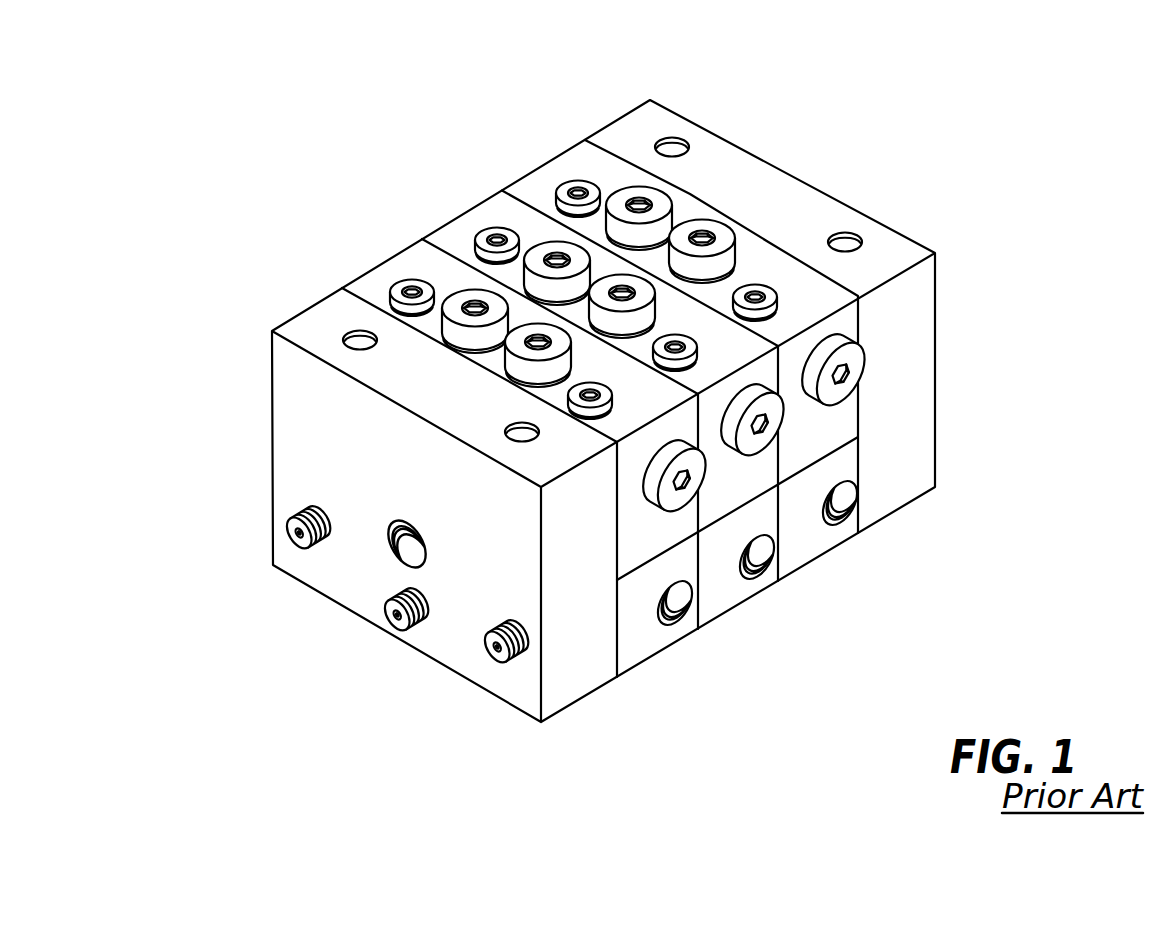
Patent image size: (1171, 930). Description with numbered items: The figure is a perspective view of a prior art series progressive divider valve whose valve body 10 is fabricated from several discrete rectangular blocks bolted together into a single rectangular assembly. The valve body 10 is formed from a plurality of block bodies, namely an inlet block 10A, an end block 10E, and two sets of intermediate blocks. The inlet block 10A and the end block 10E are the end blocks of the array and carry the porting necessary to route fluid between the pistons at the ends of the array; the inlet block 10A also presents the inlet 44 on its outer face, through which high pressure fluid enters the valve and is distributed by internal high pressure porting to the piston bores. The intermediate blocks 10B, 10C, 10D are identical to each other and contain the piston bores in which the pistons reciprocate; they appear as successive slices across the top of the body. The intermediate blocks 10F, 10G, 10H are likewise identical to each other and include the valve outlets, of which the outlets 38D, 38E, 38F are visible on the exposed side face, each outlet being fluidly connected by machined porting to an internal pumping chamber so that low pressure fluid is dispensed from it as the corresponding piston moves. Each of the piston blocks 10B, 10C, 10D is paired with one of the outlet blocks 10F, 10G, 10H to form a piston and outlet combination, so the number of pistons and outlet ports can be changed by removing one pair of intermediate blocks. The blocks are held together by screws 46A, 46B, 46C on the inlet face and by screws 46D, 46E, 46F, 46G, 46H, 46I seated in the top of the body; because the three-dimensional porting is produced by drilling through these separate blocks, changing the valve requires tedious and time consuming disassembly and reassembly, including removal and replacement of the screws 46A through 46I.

The valve body 10 is at (950, 340).
The inlet block 10A is at (292, 415).
The intermediate block 10B is at (393, 275).
The intermediate block 10C is at (493, 203).
The intermediate block 10D is at (576, 153).
The end block 10E is at (777, 172).
The intermediate block 10F is at (633, 630).
The intermediate block 10G is at (725, 588).
The intermediate block 10H is at (805, 527).
The outlet 38D is at (847, 523).
The outlet 38E is at (668, 628).
The outlet 38F is at (757, 580).
The inlet 44 is at (410, 533).
The screw 46A is at (303, 545).
The screw 46B is at (412, 630).
The screw 46C is at (507, 662).
The screw 46D is at (418, 302).
The screw 46E is at (570, 393).
The screw 46F is at (478, 237).
The screw 46G is at (657, 348).
The screw 46H is at (570, 182).
The screw 46I is at (765, 282).